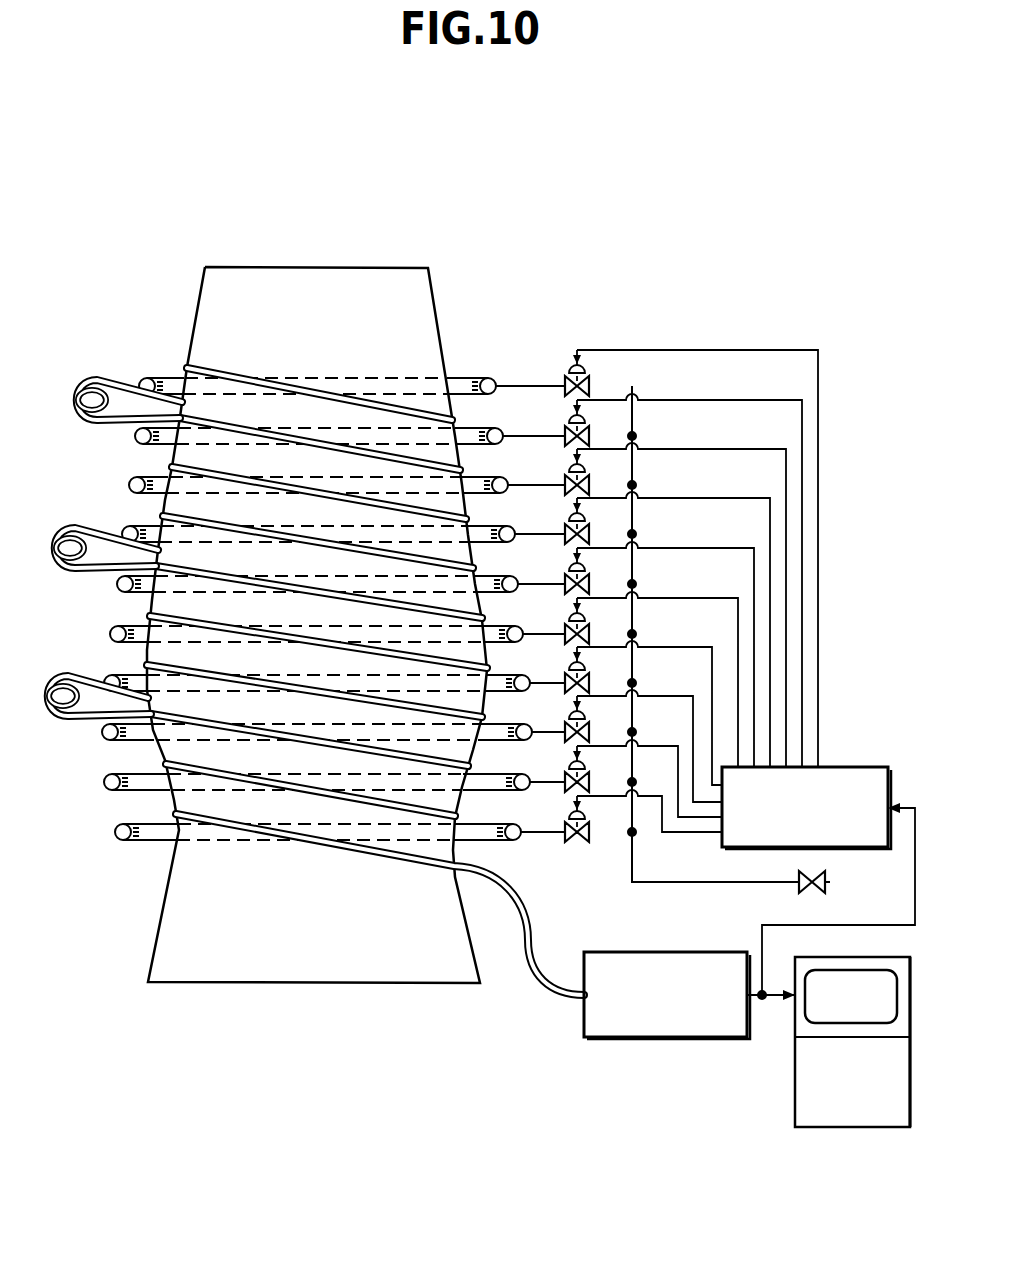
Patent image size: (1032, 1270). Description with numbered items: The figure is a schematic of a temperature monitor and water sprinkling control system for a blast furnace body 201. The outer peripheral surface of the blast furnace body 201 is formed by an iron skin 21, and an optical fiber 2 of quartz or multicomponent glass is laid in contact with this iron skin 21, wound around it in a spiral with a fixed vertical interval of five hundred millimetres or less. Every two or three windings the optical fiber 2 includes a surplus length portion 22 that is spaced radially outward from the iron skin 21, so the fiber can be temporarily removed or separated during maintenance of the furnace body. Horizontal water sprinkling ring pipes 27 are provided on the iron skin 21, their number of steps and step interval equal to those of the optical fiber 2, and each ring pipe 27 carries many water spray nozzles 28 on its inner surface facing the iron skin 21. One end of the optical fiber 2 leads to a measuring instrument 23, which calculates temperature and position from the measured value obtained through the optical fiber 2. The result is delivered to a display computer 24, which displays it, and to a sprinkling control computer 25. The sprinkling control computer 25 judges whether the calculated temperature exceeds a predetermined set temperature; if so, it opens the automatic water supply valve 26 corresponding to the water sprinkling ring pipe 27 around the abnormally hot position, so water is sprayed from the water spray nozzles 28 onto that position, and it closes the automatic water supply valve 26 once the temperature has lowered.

The blast furnace body 201 is at (324, 583).
The iron skin 21 is at (438, 326).
The optical fiber 2 is at (519, 947).
The surplus length portion 22 is at (92, 424).
The measuring instrument 23 is at (630, 951).
The display computer 24 is at (795, 1118).
The sprinkling control computer 25 is at (720, 840).
The automatic water supply valve 26 is at (565, 372).
The water sprinkling ring pipe 27 is at (142, 845).
The water spray nozzle 28 is at (149, 376).